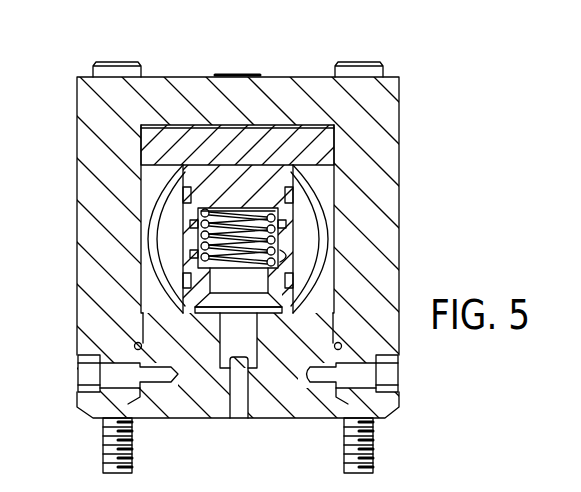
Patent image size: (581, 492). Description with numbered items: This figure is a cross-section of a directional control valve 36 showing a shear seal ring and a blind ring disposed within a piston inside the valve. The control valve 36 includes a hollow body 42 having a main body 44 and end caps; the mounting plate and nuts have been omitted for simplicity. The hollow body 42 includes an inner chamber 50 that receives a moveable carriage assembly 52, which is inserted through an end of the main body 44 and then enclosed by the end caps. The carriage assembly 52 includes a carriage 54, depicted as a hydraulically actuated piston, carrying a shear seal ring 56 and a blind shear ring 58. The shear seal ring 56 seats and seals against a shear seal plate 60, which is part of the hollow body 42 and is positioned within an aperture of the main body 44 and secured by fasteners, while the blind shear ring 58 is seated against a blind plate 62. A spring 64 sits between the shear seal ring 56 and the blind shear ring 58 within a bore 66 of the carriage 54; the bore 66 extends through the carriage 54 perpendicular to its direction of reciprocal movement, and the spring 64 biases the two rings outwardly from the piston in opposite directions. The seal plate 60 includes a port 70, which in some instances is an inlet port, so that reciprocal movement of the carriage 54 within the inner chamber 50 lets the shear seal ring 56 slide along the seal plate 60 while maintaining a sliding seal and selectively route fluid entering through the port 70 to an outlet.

The directional control valve 36 is at (52, 70).
The hollow body 42 is at (158, 422).
The main body 44 is at (77, 212).
The inner chamber 50 is at (318, 178).
The carriage assembly 52 is at (163, 296).
The carriage 54 is at (176, 214).
The shear seal ring 56 is at (186, 305).
The blind shear ring 58 is at (210, 178).
The shear seal plate 60 is at (292, 405).
The blind plate 62 is at (262, 135).
The spring 64 is at (275, 238).
The bore 66 is at (286, 261).
The port 70 is at (247, 418).